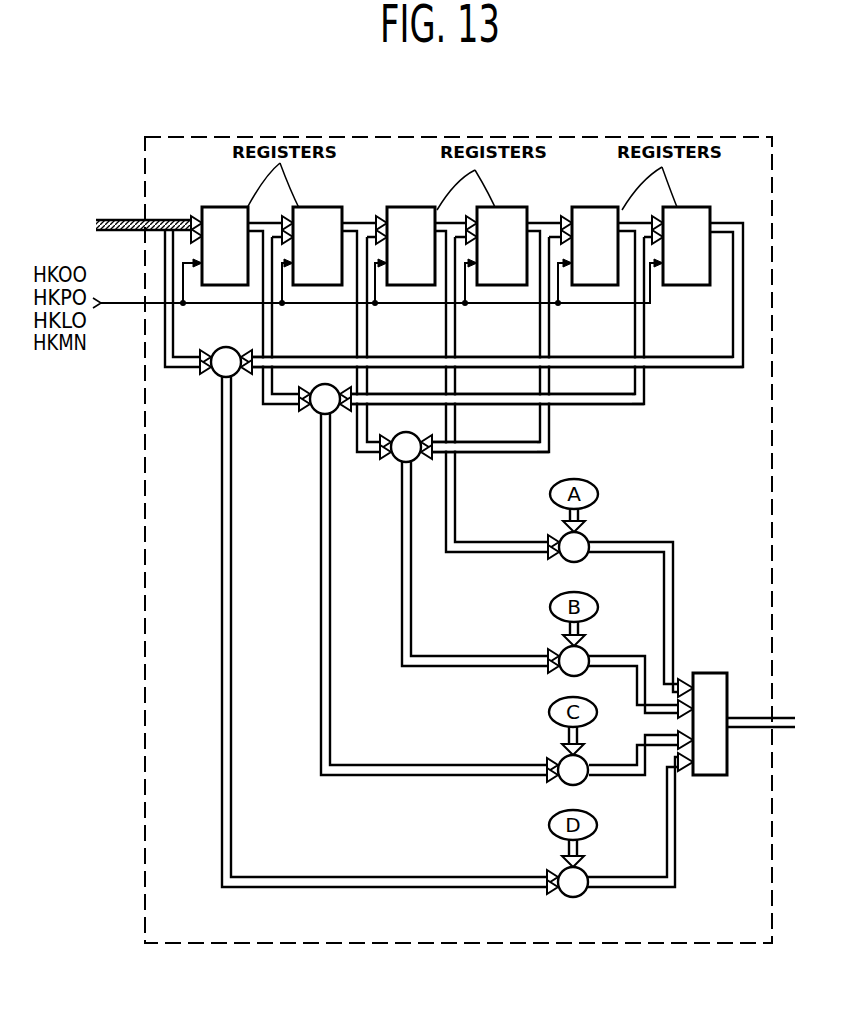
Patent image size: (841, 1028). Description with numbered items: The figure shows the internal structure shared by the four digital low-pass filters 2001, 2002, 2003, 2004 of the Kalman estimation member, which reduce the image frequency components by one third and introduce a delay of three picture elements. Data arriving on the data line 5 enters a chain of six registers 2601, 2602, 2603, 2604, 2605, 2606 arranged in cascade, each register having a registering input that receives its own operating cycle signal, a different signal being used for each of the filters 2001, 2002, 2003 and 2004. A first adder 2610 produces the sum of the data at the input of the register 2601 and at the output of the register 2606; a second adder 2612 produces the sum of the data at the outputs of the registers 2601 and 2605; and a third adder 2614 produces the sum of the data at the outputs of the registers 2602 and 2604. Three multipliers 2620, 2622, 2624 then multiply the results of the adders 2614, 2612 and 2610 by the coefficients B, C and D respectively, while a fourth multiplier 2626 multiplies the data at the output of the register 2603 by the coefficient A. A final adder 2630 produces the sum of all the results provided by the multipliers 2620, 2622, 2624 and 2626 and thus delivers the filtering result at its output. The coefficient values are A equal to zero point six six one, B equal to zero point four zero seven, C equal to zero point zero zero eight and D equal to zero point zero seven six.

The data line 5 is at (131, 212).
The register 2601 is at (238, 214).
The register 2602 is at (331, 214).
The register 2603 is at (414, 214).
The register 2604 is at (507, 216).
The register 2605 is at (600, 214).
The register 2606 is at (693, 213).
The first adder 2610 is at (222, 378).
The second adder 2612 is at (322, 415).
The third adder 2614 is at (403, 463).
The multiplier 2620 is at (565, 676).
The multiplier 2622 is at (568, 786).
The multiplier 2624 is at (576, 898).
The fourth multiplier 2626 is at (565, 562).
The final adder 2630 is at (710, 672).
The digital low-pass filter 2001 is at (283, 997).
The digital low-pass filter 2002 is at (337, 997).
The digital low-pass filter 2003 is at (395, 997).
The digital low-pass filter 2004 is at (460, 997).